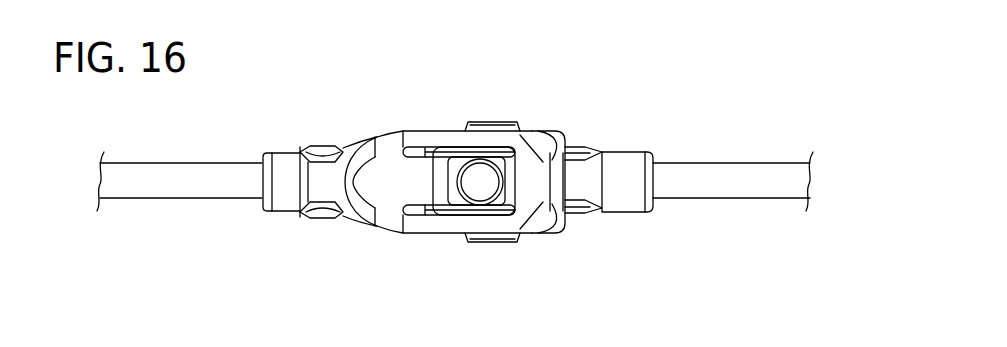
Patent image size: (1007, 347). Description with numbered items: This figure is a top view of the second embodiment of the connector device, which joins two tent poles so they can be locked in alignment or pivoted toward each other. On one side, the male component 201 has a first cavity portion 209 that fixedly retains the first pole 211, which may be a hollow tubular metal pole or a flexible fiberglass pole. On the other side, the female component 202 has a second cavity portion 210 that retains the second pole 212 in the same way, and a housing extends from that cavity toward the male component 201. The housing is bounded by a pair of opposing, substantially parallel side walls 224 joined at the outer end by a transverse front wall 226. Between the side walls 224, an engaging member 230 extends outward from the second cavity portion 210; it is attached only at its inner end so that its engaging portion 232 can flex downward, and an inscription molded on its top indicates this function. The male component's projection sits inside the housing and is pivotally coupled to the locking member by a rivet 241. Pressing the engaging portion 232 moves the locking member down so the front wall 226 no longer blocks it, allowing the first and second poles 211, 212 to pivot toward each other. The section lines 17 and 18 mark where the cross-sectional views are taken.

The section line 17- 17 is at (87, 180).
The section line 18- 18 is at (492, 115).
The male component 201 is at (620, 215).
The female component 202 is at (360, 140).
The first cavity portion 209 is at (615, 168).
The second cavity portion 210 is at (290, 177).
The first pole 211 is at (733, 193).
The second pole 212 is at (147, 195).
The side walls 224 is at (460, 142).
The front wall 226 is at (537, 178).
The engaging member 230 is at (383, 195).
The engaging portion 232 is at (477, 188).
The rivet 241 is at (503, 242).